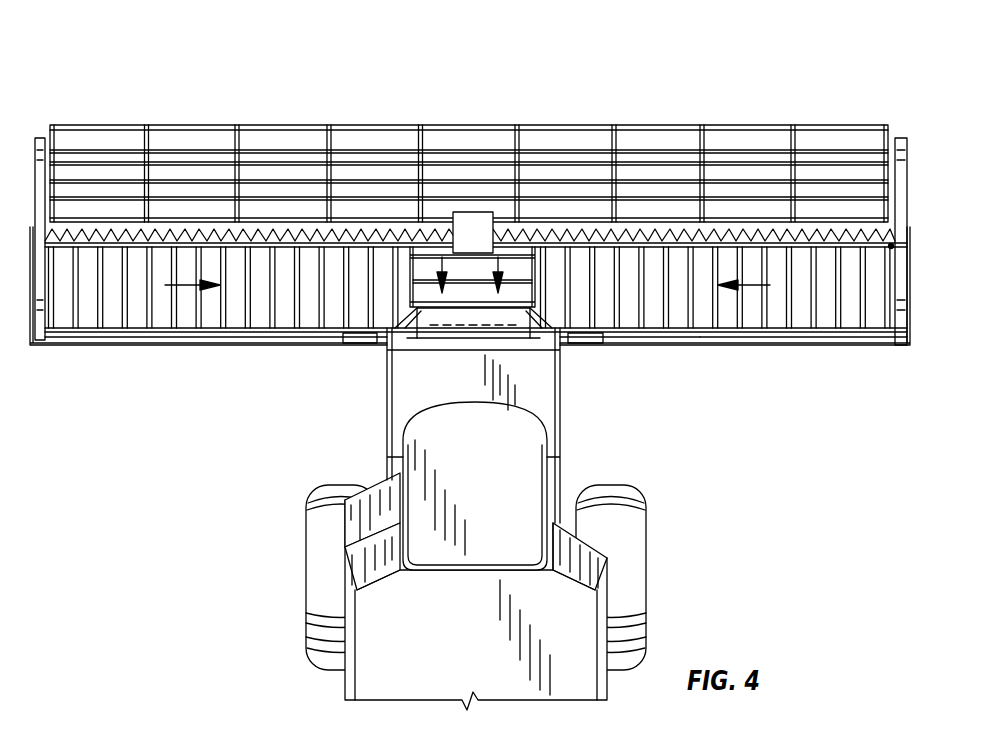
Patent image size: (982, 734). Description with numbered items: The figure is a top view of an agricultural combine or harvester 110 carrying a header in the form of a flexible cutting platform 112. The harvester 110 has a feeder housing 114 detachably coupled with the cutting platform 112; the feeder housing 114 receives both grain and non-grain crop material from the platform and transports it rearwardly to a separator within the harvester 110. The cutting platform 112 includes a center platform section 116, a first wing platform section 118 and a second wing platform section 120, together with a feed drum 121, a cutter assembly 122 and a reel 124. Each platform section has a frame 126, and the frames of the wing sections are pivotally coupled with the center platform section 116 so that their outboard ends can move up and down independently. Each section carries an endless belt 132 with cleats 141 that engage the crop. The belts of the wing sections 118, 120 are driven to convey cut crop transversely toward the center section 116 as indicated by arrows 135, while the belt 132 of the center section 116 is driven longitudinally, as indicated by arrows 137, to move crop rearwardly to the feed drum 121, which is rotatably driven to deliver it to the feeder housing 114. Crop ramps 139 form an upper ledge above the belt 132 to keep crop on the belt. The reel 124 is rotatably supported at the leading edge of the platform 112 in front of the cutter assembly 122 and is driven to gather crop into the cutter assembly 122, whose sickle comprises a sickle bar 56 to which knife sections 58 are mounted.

The harvester 110 is at (721, 497).
The flexible cutting platform 112 is at (812, 84).
The feeder housing 114 is at (560, 405).
The center platform section 116 is at (401, 264).
The first wing platform section 118 is at (162, 360).
The second wing platform section 120 is at (808, 360).
The feed drum 121 is at (432, 330).
The cutter assembly 122 is at (847, 233).
The reel 124 is at (471, 119).
The frame 126 is at (685, 346).
The endless belt 132 is at (142, 317).
The arrows 135 is at (182, 288).
The arrows 137 is at (473, 288).
The crop ramps 139 is at (892, 246).
The cleats 141 is at (99, 308).
The sickle bar 56 is at (280, 245).
The knife sections 58 is at (653, 234).